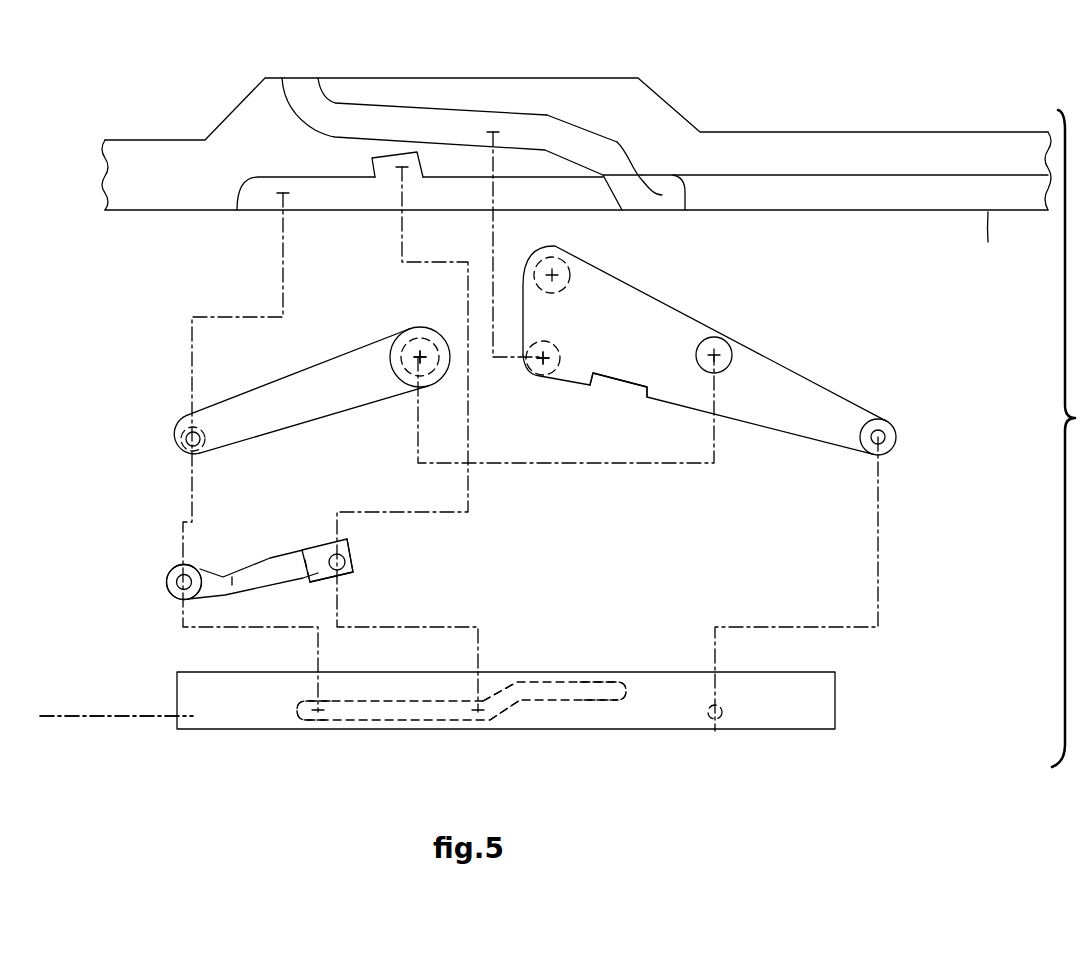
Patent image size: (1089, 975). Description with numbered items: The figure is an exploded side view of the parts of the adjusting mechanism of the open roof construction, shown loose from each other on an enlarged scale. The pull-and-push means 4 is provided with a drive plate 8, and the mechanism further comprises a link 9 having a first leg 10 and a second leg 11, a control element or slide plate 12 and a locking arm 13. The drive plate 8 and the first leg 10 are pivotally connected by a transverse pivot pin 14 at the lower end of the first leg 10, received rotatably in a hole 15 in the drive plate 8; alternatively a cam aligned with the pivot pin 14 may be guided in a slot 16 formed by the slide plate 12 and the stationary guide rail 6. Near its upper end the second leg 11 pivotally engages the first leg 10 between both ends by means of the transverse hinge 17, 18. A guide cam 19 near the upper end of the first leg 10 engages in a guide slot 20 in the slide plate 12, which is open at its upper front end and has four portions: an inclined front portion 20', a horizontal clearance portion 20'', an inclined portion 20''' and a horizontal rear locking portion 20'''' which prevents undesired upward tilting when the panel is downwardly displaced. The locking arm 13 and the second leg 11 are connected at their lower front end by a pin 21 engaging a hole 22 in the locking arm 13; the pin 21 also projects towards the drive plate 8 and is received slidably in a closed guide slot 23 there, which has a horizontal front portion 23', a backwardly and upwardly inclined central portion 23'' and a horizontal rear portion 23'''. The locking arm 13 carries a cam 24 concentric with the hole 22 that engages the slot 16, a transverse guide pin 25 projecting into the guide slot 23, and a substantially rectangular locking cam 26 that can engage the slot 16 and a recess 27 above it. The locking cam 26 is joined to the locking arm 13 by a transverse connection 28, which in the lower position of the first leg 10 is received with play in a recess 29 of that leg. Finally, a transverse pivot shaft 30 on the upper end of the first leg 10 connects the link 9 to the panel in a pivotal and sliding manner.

The pull-and-push means 4 is at (123, 716).
The stationary guide rail 6 is at (990, 243).
The drive plate 8 is at (787, 703).
The link 9 is at (448, 373).
The first leg 10 is at (778, 382).
The second leg 11 is at (340, 378).
The slide plate 12 is at (135, 160).
The locking arm 13 is at (255, 572).
The transverse pivot pin 14 is at (885, 423).
The hole 15 is at (718, 720).
The slot 16 is at (258, 190).
The transverse hinge 17 is at (402, 362).
The transverse hinge 18 is at (723, 342).
The guide cam 19 is at (540, 373).
The guide slot 20 is at (452, 113).
The front portion 20' is at (427, 66).
The clearance portion 20'' is at (532, 79).
The inclined portion 20''' is at (592, 106).
The rear locking portion 20'''' is at (623, 96).
The pin 21 is at (178, 440).
The hole 22 is at (176, 580).
The guide slot 23 is at (461, 736).
The front portion 23' is at (327, 746).
The central portion 23'' is at (547, 736).
The rear portion 23''' is at (632, 736).
The cam 24 is at (180, 566).
The transverse guide pin 25 is at (347, 558).
The locking cam 26 is at (312, 548).
The recess 27 is at (388, 167).
The transverse connection 28 is at (350, 578).
The recess 29 is at (613, 387).
The transverse pivot shaft 30 is at (563, 260).